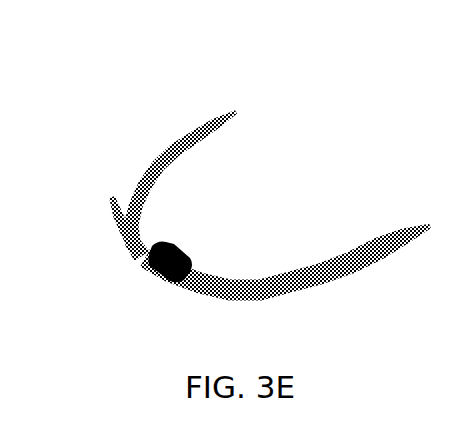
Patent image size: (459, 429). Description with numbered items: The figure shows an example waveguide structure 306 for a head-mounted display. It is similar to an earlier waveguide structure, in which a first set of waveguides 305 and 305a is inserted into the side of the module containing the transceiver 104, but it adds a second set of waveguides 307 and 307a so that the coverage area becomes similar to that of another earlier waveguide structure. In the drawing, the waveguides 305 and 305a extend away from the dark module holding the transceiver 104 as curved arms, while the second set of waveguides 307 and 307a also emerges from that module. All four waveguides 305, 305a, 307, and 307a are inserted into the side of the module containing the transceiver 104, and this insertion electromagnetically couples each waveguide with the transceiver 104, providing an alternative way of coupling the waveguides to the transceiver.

The waveguide structure 306 is at (171, 84).
The waveguide 305 is at (355, 258).
The waveguide 305a is at (141, 170).
The waveguide 307 is at (138, 261).
The waveguide 307a is at (131, 237).
The transceiver 104 is at (178, 248).